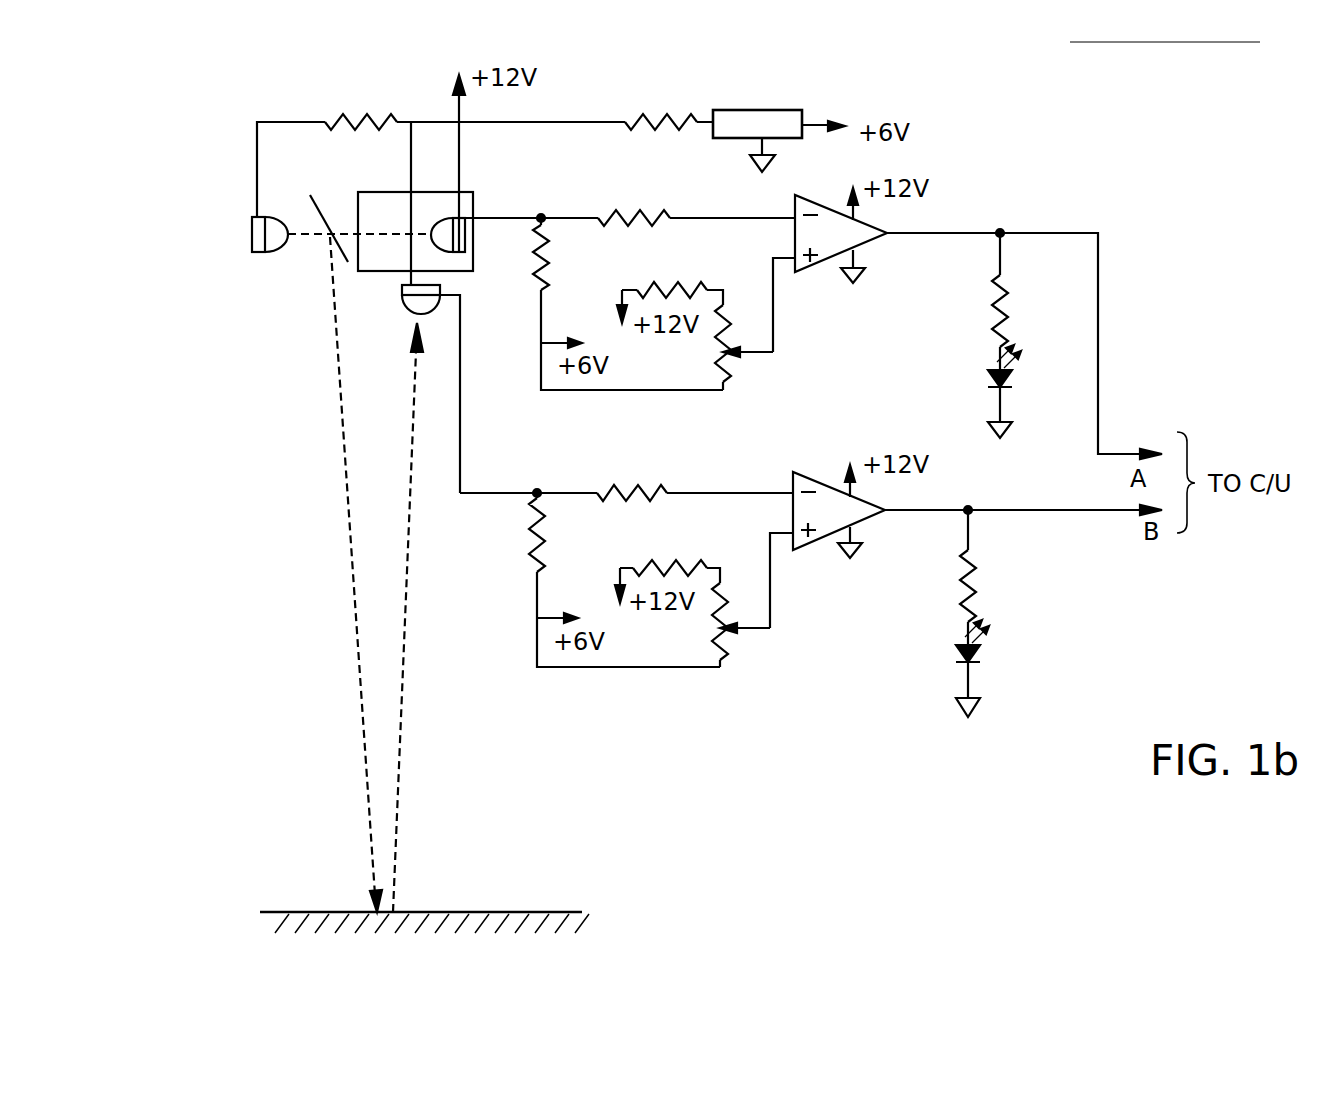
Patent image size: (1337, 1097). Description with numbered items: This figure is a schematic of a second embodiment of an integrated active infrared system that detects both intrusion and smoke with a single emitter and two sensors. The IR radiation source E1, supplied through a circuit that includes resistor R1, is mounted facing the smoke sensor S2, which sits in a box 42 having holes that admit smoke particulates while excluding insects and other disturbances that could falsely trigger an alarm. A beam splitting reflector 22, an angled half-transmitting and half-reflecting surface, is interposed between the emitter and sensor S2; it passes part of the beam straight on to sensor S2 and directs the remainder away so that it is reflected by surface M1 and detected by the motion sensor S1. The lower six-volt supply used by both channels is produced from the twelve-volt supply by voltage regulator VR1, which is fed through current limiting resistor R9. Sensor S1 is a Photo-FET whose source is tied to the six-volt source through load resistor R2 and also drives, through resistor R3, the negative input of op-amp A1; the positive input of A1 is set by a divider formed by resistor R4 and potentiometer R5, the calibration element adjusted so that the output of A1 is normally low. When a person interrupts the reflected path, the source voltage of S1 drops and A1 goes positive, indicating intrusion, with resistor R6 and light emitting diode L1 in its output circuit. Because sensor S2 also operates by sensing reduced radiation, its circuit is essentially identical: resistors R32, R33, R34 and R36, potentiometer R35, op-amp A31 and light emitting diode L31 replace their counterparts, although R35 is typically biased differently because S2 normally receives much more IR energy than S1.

The resistor R1 is at (361, 106).
The current limiting resistor R9 is at (661, 106).
The voltage regulator VR1 is at (779, 141).
The IR radiation source E1 is at (253, 234).
The beam splitting reflector 22 is at (330, 232).
The box 42 is at (385, 190).
The IR sensor S2 is at (440, 222).
The IR sensor S1 is at (405, 307).
The surface M1 is at (573, 930).
The resistor R33 is at (634, 205).
The resistor R32 is at (566, 257).
The resistor R34 is at (672, 278).
The potentiometer R35 is at (750, 348).
The operational amplifier A31 is at (841, 235).
The resistor R36 is at (1025, 290).
The light emitting diode L31 is at (1022, 391).
The resistor R3 is at (632, 480).
The load resistor R2 is at (555, 535).
The resistor R4 is at (670, 555).
The potentiometer R5 is at (741, 624).
The operational amplifier A1 is at (839, 511).
The resistor R6 is at (987, 566).
The light emitting diode L1 is at (984, 668).